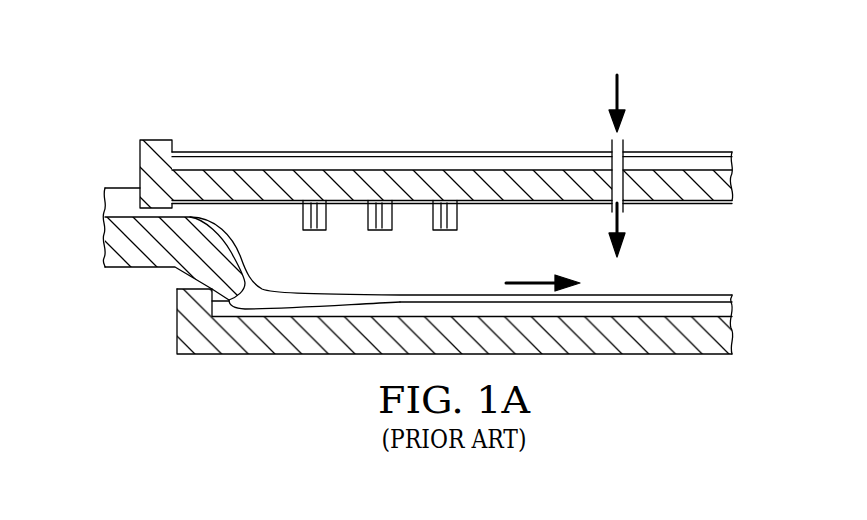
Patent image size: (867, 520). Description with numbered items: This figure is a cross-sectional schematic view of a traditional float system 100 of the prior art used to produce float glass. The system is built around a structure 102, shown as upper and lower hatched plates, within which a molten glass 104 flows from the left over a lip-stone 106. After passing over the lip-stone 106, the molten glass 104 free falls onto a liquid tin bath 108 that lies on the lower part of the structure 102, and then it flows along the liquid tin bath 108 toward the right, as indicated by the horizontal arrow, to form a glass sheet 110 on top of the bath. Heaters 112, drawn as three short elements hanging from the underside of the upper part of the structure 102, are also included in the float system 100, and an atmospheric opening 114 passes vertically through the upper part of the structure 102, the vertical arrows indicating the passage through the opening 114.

The traditional float system 100 is at (418, 192).
The structure 102 is at (735, 193).
The molten glass 104 is at (105, 203).
The lip-stone 106 is at (105, 248).
The liquid tin bath 108 is at (735, 313).
The glass sheet 110 is at (713, 293).
The heaters 112 is at (320, 232).
The atmospheric opening 114 is at (620, 217).